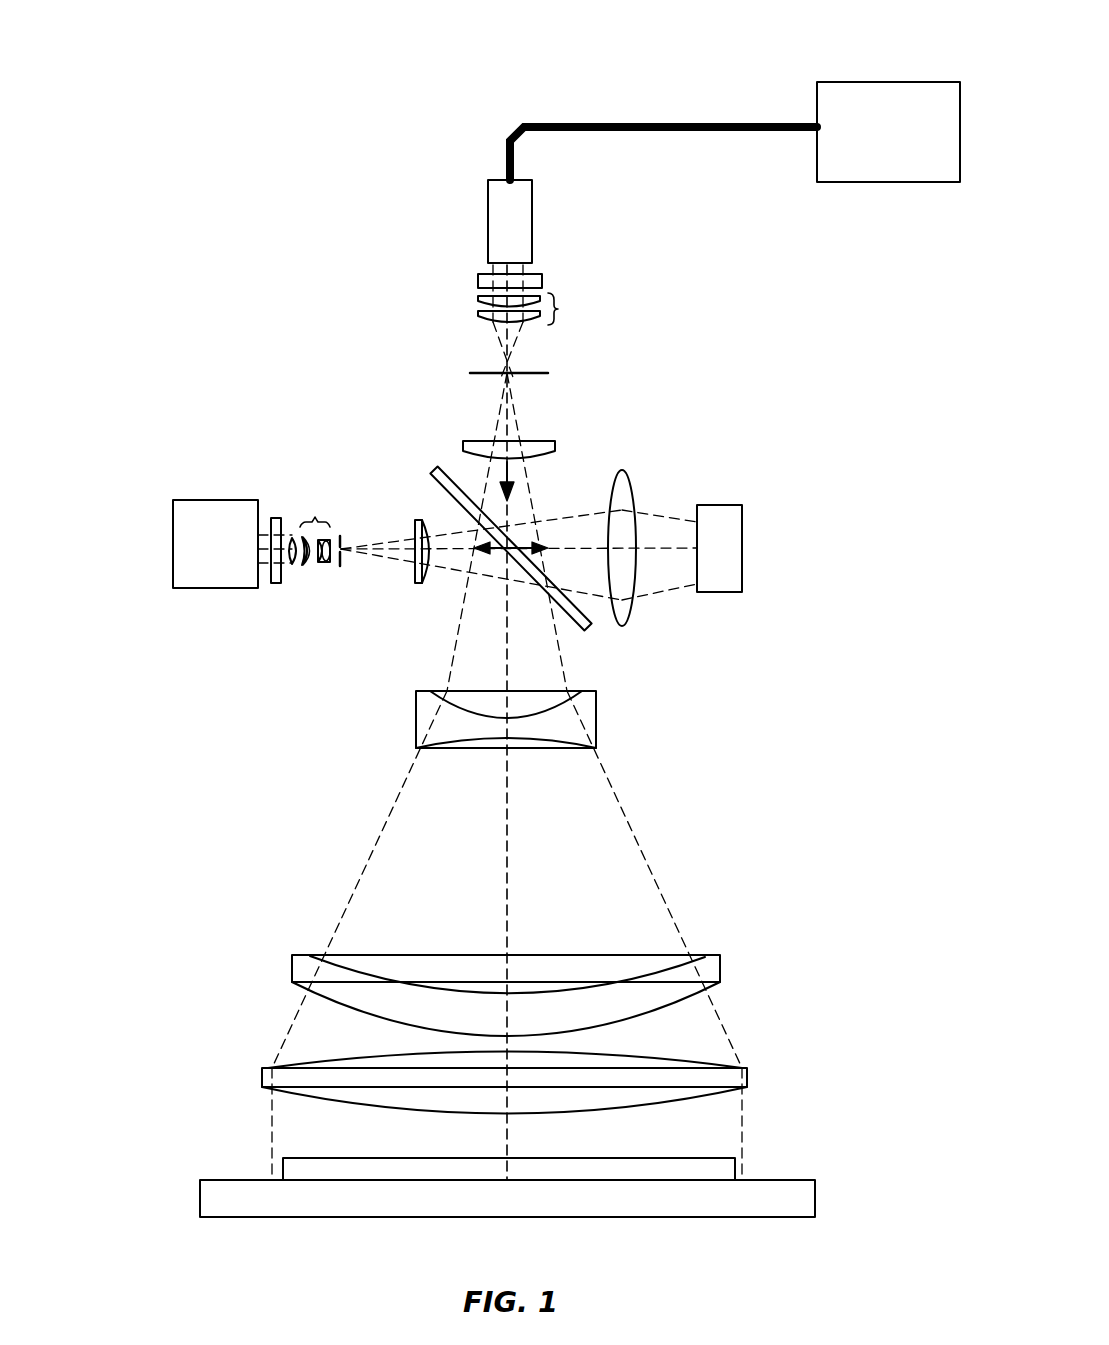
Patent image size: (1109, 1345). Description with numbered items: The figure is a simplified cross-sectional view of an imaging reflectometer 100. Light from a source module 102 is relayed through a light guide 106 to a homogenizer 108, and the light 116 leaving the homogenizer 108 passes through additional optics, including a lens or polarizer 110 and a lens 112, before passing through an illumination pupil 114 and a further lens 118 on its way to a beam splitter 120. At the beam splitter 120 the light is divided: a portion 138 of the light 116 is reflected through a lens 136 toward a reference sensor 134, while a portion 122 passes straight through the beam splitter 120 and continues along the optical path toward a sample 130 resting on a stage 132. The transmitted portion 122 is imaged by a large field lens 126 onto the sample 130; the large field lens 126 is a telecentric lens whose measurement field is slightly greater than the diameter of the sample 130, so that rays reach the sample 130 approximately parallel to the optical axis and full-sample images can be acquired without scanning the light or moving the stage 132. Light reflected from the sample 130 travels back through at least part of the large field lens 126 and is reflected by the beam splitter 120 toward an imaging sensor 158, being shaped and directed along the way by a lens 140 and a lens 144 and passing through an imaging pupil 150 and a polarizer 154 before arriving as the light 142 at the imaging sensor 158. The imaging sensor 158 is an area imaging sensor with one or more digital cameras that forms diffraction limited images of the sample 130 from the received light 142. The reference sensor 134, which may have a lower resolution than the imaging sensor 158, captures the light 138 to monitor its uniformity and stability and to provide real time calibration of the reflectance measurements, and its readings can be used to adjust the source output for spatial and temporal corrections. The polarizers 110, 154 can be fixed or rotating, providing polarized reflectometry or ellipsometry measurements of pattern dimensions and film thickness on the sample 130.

The imaging reflectometer 100 is at (312, 160).
The source module 102 is at (905, 82).
The light guide 106 is at (715, 125).
The homogenizer 108 is at (533, 225).
The lens (or polarizer) 110 is at (478, 278).
The lens 112 is at (560, 308).
The illumination pupil 114 is at (547, 373).
The light 116 is at (502, 345).
The lens 118 is at (555, 444).
The beam splitter 120 is at (440, 468).
The portion of the light 122 is at (628, 828).
The large field lens 126 is at (722, 965).
The sample 130 is at (568, 1158).
The stage 132 is at (778, 1180).
The reference sensor 134 is at (715, 505).
The lens 136 is at (620, 627).
The portion of the light (reference light) 138 is at (680, 587).
The lens 140 is at (420, 520).
The light (reflected from sample) 142 is at (375, 530).
The lens 144 is at (315, 515).
The imaging pupil 150 is at (342, 568).
The polarizer 154 is at (277, 585).
The imaging sensor 158 is at (197, 500).